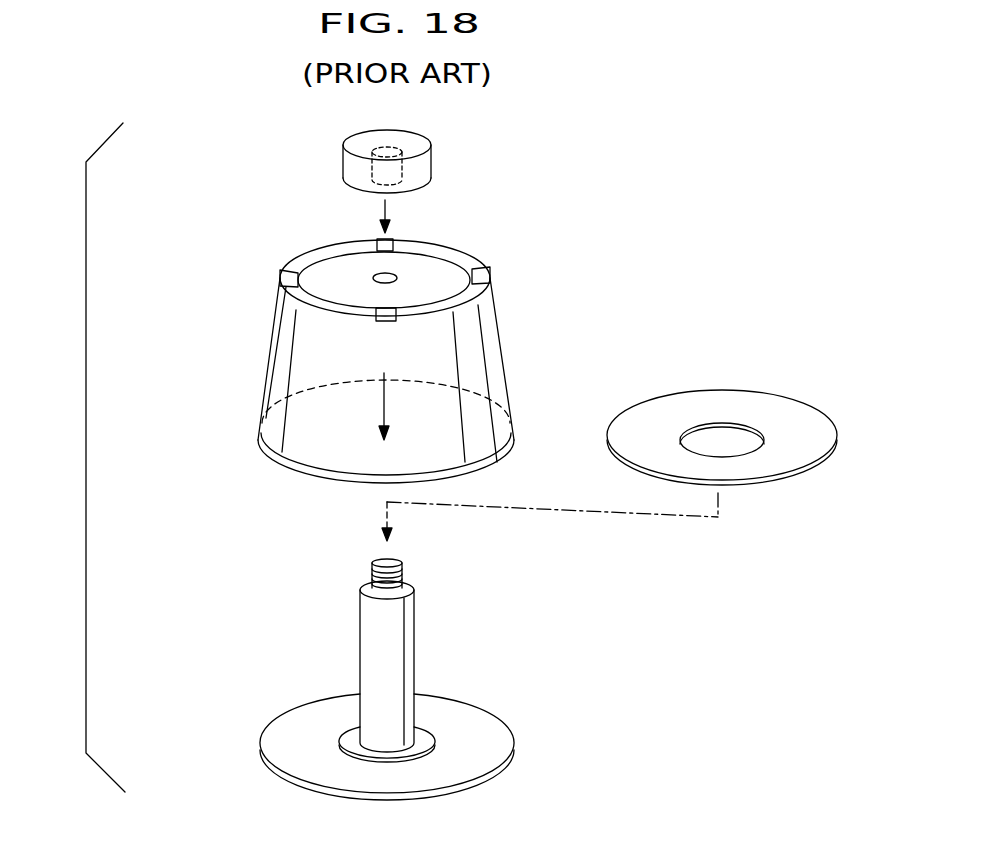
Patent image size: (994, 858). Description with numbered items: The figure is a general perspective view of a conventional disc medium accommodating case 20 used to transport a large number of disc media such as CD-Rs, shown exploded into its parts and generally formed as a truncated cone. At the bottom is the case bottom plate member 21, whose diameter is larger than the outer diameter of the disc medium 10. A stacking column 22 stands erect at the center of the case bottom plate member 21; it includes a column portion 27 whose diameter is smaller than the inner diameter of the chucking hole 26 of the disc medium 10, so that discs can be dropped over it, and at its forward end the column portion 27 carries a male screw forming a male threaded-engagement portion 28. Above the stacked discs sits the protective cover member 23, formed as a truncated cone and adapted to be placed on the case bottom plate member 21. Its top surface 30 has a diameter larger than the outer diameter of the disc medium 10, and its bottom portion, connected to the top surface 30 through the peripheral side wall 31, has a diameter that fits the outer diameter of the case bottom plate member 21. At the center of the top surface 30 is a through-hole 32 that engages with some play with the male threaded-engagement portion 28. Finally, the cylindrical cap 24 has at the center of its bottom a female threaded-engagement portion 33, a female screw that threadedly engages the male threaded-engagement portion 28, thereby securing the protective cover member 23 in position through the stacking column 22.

The disc medium 10 is at (722, 391).
The disc medium accommodating case 20 is at (678, 250).
The case bottom plate member 21 is at (493, 735).
The stacking column 22 is at (432, 673).
The protective cover member 23 is at (392, 351).
The cap 24 is at (397, 158).
The chucking hole 26 is at (718, 437).
The column portion 27 is at (408, 624).
The male threaded-engagement portion 28 is at (375, 576).
The top surface 30 is at (438, 267).
The peripheral side wall 31 is at (268, 352).
The through-hole 32 is at (374, 272).
The female threaded-engagement portion 33 is at (368, 170).